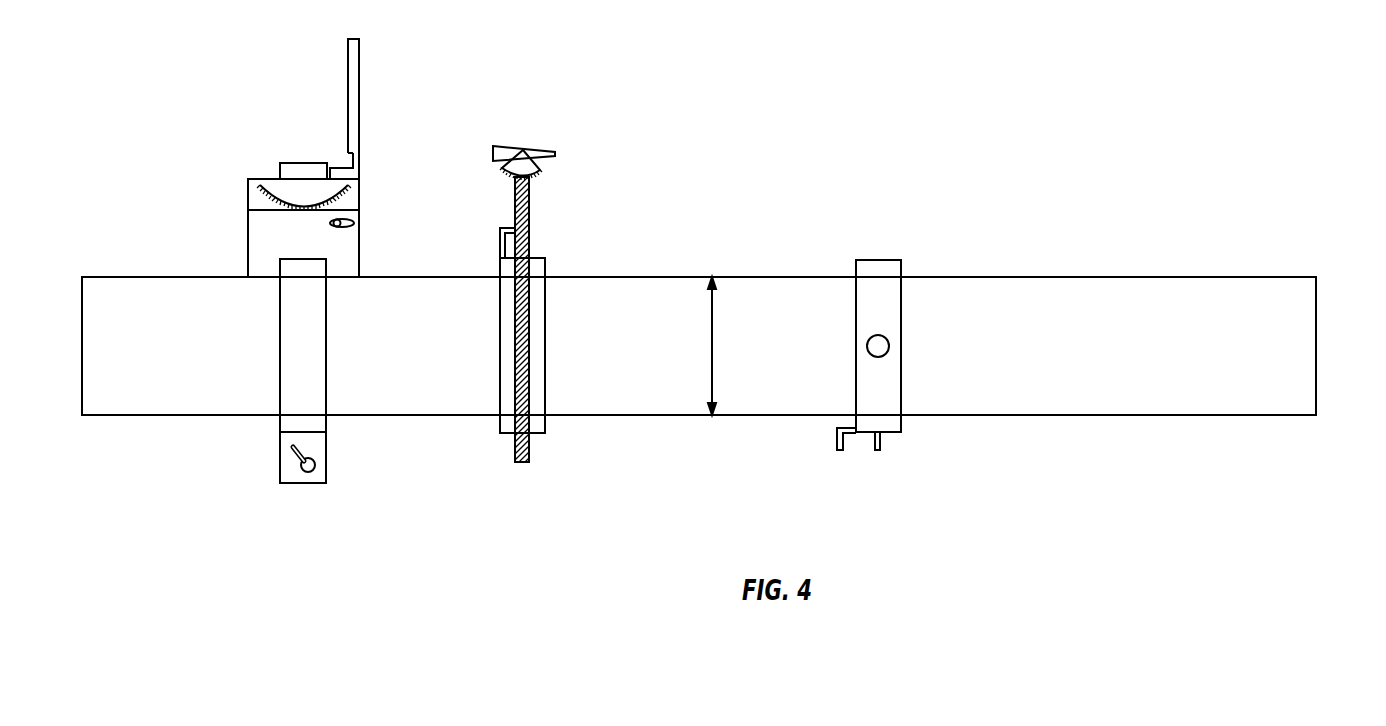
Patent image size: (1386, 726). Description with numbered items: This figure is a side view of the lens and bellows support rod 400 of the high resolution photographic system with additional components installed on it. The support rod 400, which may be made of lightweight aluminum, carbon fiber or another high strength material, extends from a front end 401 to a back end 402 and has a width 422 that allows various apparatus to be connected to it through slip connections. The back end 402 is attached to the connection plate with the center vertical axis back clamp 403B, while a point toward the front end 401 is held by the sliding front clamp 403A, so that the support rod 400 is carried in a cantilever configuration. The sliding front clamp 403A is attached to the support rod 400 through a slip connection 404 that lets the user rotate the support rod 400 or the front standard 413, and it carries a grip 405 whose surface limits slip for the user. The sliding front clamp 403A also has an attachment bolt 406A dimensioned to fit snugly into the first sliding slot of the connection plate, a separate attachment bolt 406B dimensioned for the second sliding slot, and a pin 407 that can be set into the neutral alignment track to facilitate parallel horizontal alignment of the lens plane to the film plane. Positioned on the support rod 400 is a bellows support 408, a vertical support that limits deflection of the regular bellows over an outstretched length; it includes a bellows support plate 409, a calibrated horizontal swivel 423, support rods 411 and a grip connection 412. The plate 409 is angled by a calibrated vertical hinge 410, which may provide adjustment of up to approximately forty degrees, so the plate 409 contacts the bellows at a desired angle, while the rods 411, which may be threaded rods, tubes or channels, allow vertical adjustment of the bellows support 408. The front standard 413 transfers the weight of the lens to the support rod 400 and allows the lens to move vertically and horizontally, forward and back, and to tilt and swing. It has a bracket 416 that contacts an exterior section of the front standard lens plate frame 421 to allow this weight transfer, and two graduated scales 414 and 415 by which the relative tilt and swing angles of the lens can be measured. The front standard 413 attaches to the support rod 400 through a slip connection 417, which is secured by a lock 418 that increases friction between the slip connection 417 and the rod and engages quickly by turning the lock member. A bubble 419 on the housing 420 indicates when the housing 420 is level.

The lens and bellows support rod 400 is at (1195, 400).
The front end 401 is at (170, 295).
The back end 402 is at (1305, 317).
The sliding front clamp 403A is at (855, 330).
The center vertical axis back clamp 403B is at (1208, 248).
The slip connection 404 is at (882, 268).
The grip 405 is at (890, 346).
The attachment bolt 406A is at (883, 442).
The attachment bolt 406B is at (877, 453).
The pin 407 is at (835, 440).
The bellows support 408 is at (537, 423).
The bellows support plate 409 is at (507, 143).
The calibrated vertical hinge 410 is at (543, 163).
The support rods 411 is at (530, 213).
The grip connection 412 is at (513, 433).
The front standard 413 is at (258, 263).
The graduated scale 414 is at (258, 192).
The graduated scale 415 is at (312, 163).
The bracket 416 is at (362, 167).
The slip connection 417 is at (313, 352).
The lock 418 is at (290, 463).
The bubble 419 is at (358, 217).
The housing 420 is at (362, 260).
The front standard lens plate frame 421 is at (362, 58).
The width 422 is at (713, 350).
The calibrated horizontal swivel 423 is at (497, 145).